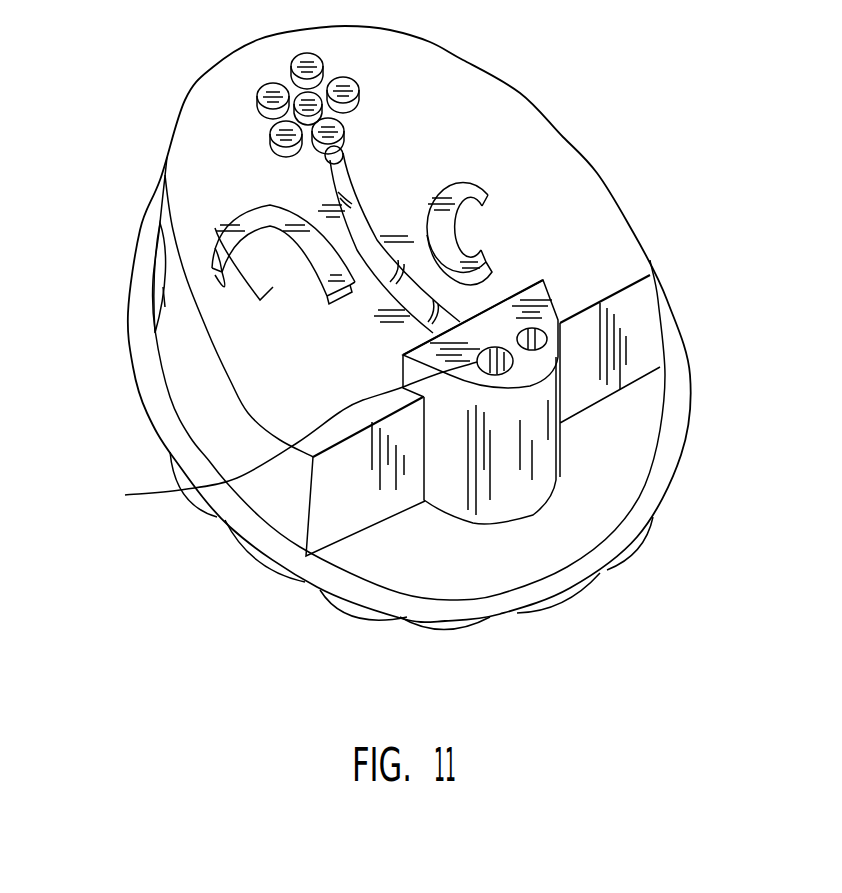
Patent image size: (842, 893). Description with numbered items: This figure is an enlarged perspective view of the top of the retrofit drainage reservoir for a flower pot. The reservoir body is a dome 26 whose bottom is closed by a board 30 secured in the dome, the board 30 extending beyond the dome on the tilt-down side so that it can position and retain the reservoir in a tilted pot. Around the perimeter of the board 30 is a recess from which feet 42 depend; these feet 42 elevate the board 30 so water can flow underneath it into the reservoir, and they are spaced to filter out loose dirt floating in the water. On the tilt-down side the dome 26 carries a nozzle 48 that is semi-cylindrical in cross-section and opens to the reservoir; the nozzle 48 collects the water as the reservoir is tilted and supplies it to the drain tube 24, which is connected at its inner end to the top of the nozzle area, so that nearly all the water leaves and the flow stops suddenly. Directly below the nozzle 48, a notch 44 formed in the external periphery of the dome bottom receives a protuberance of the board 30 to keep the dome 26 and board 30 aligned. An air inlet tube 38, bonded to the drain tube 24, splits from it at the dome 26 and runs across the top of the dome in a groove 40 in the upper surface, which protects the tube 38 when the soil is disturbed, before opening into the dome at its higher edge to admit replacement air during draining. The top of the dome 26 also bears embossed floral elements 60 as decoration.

The drain tube 24 is at (285, 459).
The dome 26 is at (210, 192).
The board 30 is at (603, 573).
The air inlet tube 38 is at (537, 335).
The groove 40 is at (337, 175).
The feet 42 is at (430, 627).
The notch 44 is at (560, 478).
The nozzle 48 is at (550, 397).
The embossed floral elements 60 is at (330, 95).